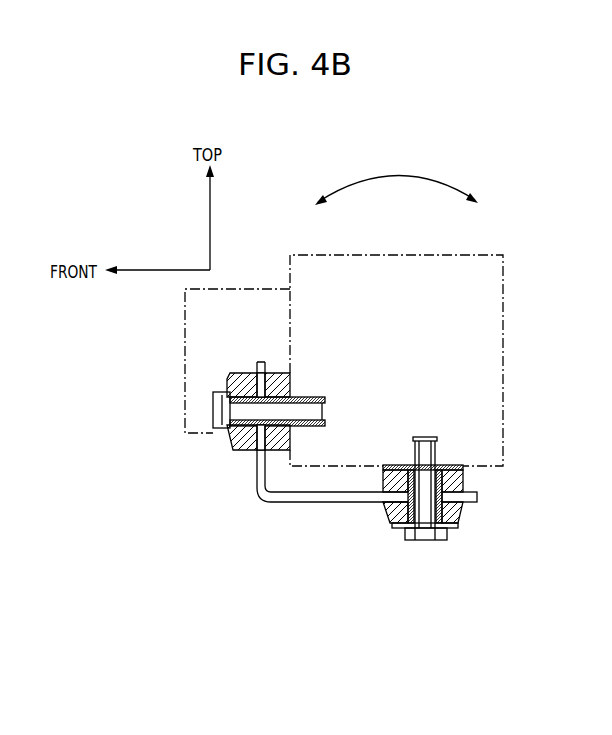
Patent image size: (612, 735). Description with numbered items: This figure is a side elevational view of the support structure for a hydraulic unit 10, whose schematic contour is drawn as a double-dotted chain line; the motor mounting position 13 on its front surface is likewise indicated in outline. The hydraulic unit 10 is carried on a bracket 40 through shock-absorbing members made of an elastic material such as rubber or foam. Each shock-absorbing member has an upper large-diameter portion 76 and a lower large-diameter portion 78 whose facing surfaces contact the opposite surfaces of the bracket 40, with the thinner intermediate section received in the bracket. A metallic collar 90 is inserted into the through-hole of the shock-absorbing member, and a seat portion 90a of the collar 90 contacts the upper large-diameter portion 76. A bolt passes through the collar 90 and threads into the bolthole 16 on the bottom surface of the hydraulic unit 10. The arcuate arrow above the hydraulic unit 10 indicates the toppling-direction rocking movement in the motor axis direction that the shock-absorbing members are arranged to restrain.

The hydraulic unit 10 is at (468, 250).
The motor mounting position 13 is at (262, 288).
The bolthole 16 is at (430, 432).
The bracket 40 is at (288, 506).
The upper large-diameter portion 76 is at (477, 497).
The lower large-diameter portion 78 is at (461, 519).
The collar 90 is at (463, 478).
The seat portion 90a is at (458, 466).